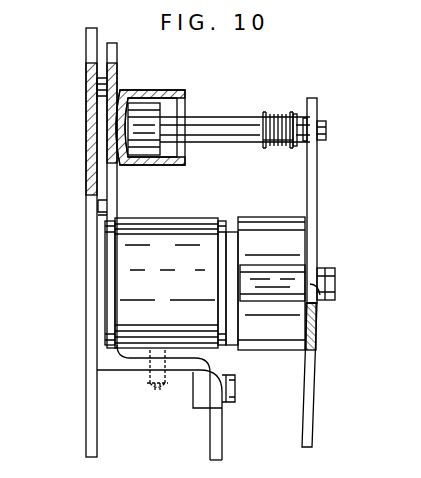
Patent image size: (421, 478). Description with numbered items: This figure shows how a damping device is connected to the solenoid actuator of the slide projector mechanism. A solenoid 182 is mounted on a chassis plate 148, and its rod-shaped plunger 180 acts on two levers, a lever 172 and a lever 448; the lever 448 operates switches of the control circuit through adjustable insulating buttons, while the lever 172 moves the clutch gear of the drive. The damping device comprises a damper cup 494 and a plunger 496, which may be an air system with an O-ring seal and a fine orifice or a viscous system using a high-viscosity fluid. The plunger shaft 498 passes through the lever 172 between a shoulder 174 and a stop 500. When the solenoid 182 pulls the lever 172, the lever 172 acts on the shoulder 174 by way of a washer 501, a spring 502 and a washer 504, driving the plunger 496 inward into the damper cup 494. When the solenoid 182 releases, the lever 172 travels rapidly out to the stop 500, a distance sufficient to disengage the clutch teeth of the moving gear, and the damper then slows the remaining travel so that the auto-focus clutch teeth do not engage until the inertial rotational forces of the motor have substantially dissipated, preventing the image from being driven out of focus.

The chassis plate 148 is at (88, 204).
The lever 172 is at (318, 197).
The shoulder 174 is at (223, 120).
The plunger 180 is at (336, 281).
The solenoid 182 is at (168, 235).
The lever 448 is at (310, 416).
The damper cup 494 is at (178, 91).
The plunger 496 is at (142, 115).
The plunger shaft 498 is at (327, 132).
The stop 500 is at (317, 116).
The washer 501 is at (296, 114).
The spring 502 is at (264, 113).
The washer 504 is at (268, 142).